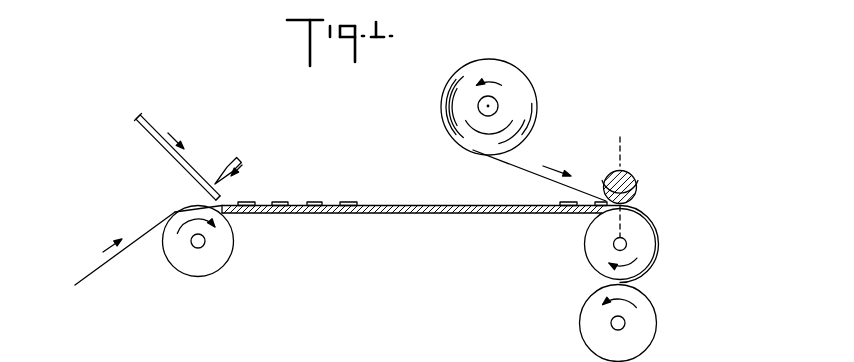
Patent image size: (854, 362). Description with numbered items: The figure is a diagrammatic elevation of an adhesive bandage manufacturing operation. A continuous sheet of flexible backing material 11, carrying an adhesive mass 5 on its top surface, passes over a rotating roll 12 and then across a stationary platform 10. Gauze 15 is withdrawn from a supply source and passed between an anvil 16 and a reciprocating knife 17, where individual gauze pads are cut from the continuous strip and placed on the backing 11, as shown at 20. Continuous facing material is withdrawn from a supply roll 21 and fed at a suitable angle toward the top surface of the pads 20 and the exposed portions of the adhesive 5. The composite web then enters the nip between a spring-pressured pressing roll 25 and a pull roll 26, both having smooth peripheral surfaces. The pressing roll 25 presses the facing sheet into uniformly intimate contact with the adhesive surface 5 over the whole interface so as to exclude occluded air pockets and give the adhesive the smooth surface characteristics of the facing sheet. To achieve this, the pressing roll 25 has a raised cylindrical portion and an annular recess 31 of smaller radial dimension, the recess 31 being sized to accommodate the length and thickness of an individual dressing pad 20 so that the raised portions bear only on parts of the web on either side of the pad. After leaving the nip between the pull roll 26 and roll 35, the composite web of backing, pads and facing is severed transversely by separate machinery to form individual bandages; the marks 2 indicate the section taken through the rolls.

The direction/section indicator 2 is at (596, 152).
The adhesive mass 5 is at (90, 274).
The stationary platform 10 is at (362, 216).
The flexible backing material 11 is at (150, 231).
The rotating roll 12 is at (192, 262).
The gauze 15 is at (153, 125).
The anvil 16 is at (200, 184).
The reciprocating knife 17 is at (232, 160).
The gauze pads 20 is at (316, 202).
The supply roll 21 is at (518, 92).
The pressing roll 25 is at (634, 176).
The pull roll 26 is at (645, 245).
The annular recess 31 is at (637, 196).
The roll 35 is at (648, 320).